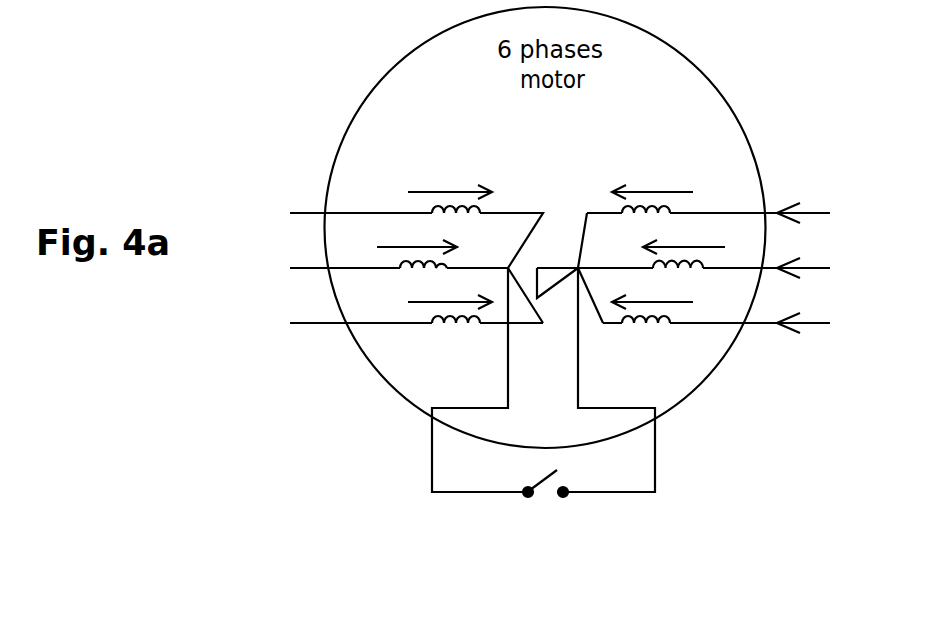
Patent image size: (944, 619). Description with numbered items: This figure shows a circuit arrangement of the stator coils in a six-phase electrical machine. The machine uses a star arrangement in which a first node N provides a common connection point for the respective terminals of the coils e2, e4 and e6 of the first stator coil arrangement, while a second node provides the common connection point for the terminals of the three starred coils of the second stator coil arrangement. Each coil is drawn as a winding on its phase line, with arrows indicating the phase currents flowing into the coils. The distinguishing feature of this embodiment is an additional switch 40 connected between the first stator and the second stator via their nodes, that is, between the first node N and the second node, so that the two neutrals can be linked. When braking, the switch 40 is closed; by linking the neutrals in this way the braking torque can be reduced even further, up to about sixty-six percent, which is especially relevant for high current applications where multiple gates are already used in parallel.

The switch 40 is at (547, 497).
The coil e2 is at (480, 208).
The coil e4 is at (404, 268).
The coil e6 is at (450, 323).
The first node N is at (480, 380).